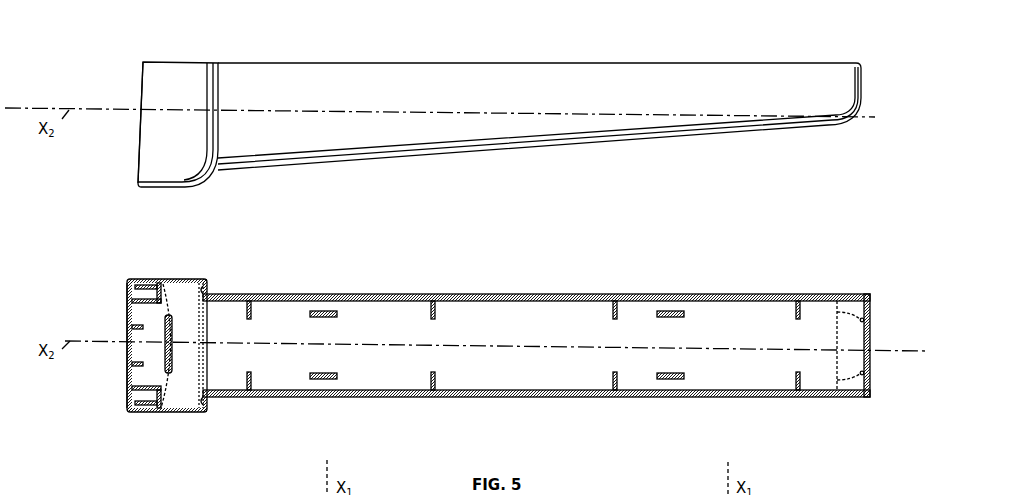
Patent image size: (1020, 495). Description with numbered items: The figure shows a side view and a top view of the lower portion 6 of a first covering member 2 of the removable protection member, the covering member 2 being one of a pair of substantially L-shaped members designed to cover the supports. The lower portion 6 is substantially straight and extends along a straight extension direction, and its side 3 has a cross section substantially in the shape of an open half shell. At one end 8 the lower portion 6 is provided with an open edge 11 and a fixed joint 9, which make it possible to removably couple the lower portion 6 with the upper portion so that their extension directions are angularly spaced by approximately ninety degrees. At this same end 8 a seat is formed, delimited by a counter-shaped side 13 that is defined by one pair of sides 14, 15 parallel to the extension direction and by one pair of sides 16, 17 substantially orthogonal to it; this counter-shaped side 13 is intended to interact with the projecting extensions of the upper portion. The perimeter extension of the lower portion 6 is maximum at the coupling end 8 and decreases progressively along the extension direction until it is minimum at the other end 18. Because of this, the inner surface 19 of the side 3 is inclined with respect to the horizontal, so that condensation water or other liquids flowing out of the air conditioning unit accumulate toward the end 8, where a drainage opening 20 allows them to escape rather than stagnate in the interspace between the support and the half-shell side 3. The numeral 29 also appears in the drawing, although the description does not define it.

The first covering member 2 is at (693, 56).
The side 3 is at (597, 96).
The lower portion 6 is at (507, 128).
The end 8 is at (158, 55).
The fixed joint 9 is at (128, 90).
The open edge 11 is at (138, 165).
The counter-shaped side 13 is at (146, 283).
The side 14 is at (165, 284).
The side 15 is at (180, 411).
The side 16 is at (208, 295).
The side 17 is at (209, 402).
The end 18 is at (866, 106).
The inner surface 19 is at (390, 150).
The drainage opening 20 is at (173, 352).
The section plane 29 is at (497, 477).